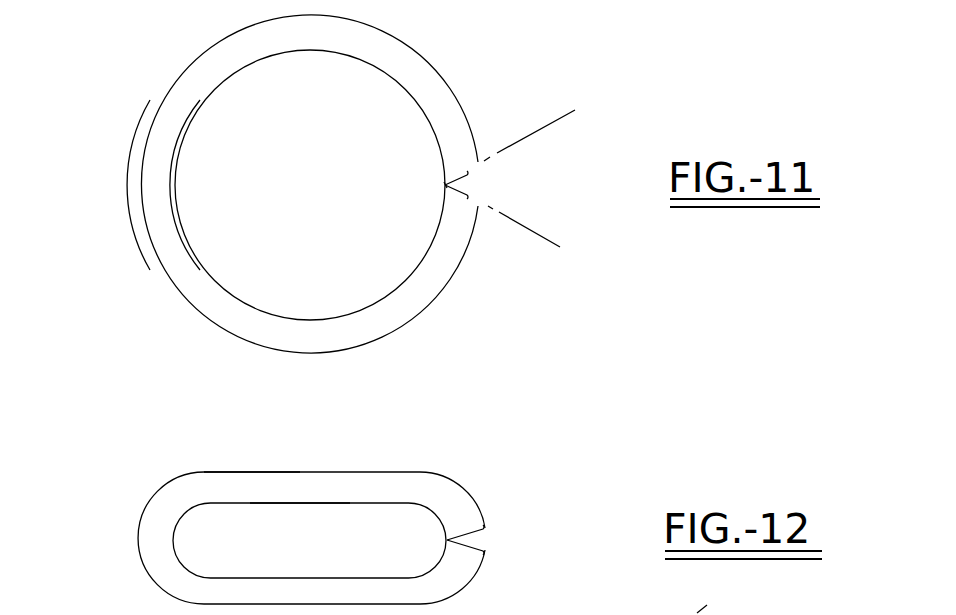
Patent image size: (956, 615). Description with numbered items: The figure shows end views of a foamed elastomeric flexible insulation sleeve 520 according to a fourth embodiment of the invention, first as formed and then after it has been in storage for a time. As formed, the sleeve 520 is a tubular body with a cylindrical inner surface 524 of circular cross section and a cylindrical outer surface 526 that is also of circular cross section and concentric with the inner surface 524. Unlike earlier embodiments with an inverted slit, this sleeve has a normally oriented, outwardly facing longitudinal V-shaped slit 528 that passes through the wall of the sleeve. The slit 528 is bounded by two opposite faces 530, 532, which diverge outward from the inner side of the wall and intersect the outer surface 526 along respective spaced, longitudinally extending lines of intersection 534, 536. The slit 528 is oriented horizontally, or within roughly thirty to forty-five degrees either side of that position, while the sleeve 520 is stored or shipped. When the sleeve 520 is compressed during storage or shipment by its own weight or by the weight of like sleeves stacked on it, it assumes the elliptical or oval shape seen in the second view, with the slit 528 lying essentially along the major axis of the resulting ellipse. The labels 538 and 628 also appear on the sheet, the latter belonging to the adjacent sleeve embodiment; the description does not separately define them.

In FIG. 11, the insulation sleeve 520 is at (436, 57).
In FIG. 12, the insulation sleeve 520 is at (334, 465).
In FIG. 11, the inner surface 524 is at (184, 148).
In FIG. 12, the inner surface 524 is at (308, 504).
In FIG. 11, the outer surface 526 is at (143, 142).
In FIG. 12, the outer surface 526 is at (276, 471).
In FIG. 11, the V-shaped slit 528 is at (490, 180).
In FIG. 12, the V-shaped slit 528 is at (495, 540).
In FIG. 11, the slit face 530 is at (462, 198).
In FIG. 12, the slit face 530 is at (484, 552).
In FIG. 11, the slit face 532 is at (462, 174).
In FIG. 12, the slit face 532 is at (484, 529).
In FIG. 11, the line of intersection 534 is at (546, 240).
In FIG. 11, the line of intersection 536 is at (545, 126).
In FIG. 11, the slit apex 538 is at (444, 186).
In FIG. 12, the sleeve element 628 is at (728, 604).